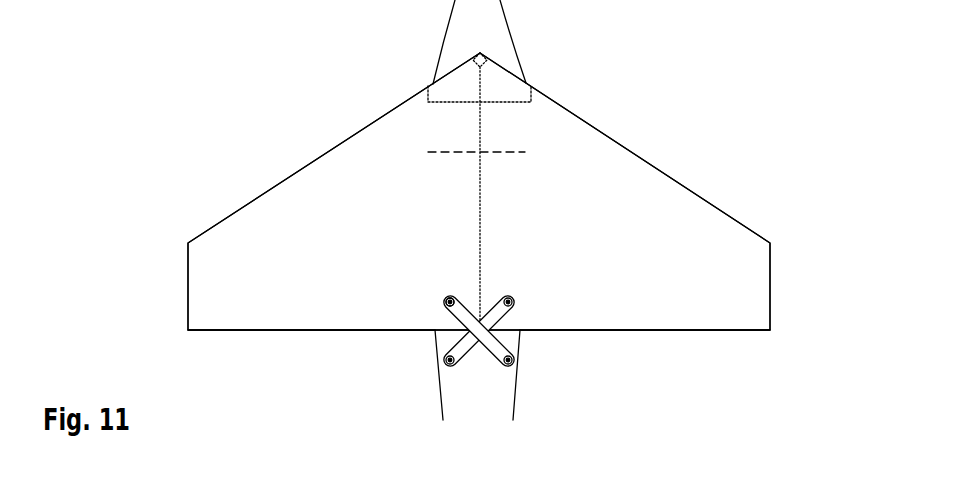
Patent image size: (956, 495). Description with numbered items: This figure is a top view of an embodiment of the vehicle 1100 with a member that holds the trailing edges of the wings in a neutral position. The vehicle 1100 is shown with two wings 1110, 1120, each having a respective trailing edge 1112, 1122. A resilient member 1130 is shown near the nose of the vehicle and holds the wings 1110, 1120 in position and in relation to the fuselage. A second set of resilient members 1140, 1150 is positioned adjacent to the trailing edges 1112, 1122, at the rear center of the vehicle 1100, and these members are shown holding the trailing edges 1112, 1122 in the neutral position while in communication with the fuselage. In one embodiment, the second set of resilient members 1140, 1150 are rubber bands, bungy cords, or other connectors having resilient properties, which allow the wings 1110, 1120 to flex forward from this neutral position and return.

The vehicle 1100 is at (476, 226).
The wing 1110 is at (325, 213).
The trailing edge 1112 is at (296, 313).
The wing 1120 is at (728, 280).
The trailing edge 1122 is at (607, 318).
The resilient member 1130 is at (428, 150).
The resilient member 1140 is at (457, 317).
The resilient member 1150 is at (467, 350).